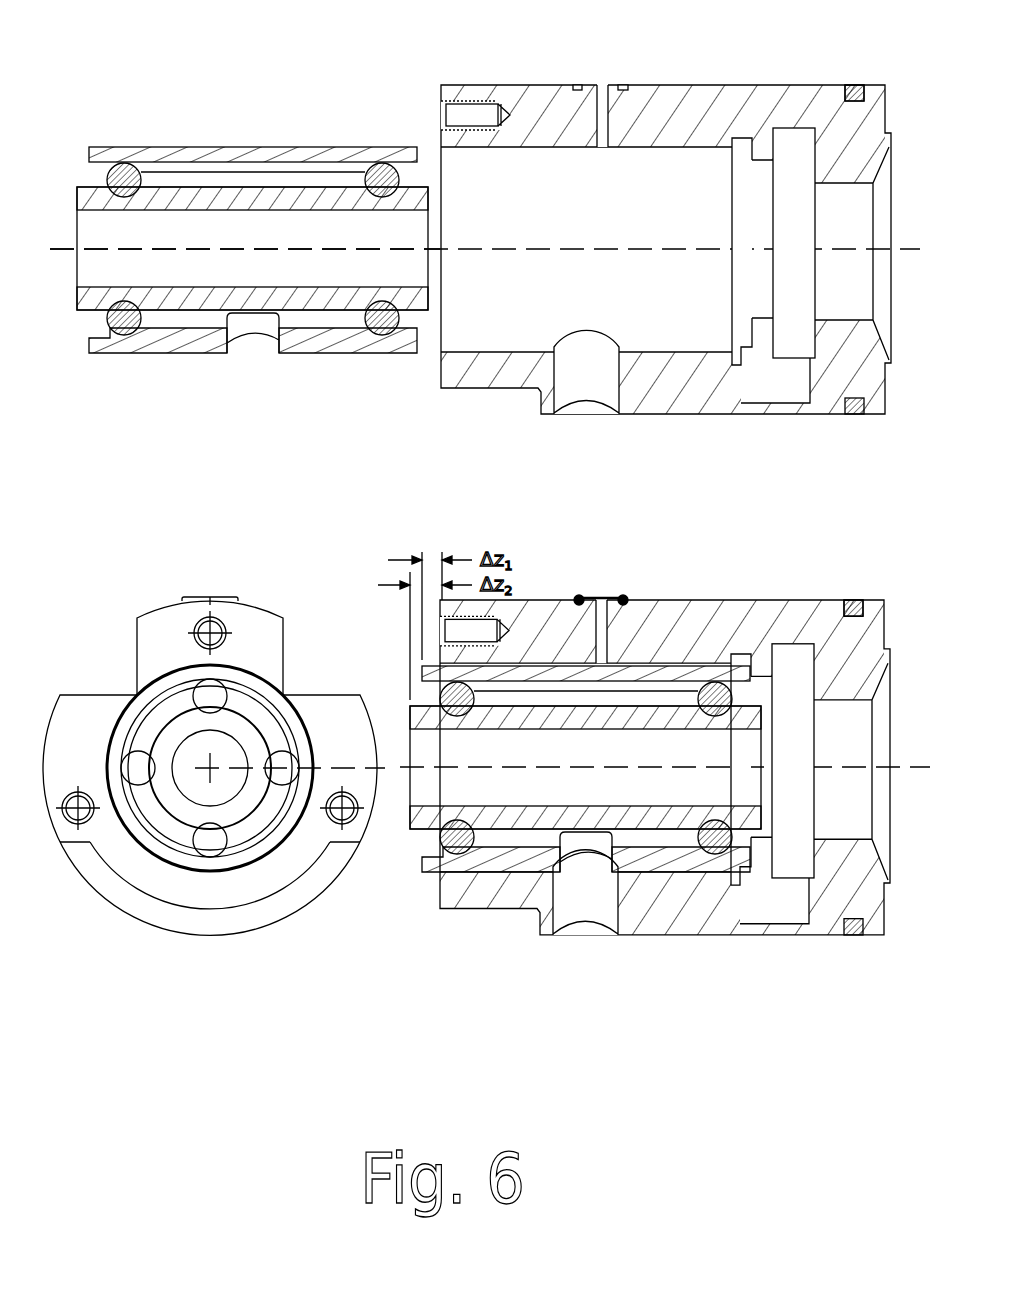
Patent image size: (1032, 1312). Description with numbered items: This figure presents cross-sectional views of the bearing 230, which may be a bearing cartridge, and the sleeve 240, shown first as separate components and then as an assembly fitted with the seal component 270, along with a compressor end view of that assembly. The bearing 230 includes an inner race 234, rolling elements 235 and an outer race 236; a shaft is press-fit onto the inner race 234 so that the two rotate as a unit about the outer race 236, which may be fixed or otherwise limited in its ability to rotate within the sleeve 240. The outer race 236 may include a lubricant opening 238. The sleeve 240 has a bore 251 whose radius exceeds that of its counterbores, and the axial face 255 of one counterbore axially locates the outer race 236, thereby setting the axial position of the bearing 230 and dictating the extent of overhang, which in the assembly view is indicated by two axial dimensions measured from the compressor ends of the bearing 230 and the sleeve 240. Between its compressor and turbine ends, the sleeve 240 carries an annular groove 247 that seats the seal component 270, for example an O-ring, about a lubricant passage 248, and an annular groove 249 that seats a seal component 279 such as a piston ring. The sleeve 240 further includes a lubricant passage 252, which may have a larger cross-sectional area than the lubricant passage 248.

The bearing 230 is at (234, 110).
The inner race 234 is at (243, 210).
The rolling elements 235 is at (210, 843).
The outer race 236 is at (403, 147).
The lubricant opening 238 is at (275, 338).
The sleeve 240 is at (713, 128).
The annular groove 247 is at (624, 85).
The lubricant passage 248 is at (597, 85).
The annular groove 249 is at (852, 92).
The bore 251 is at (575, 197).
The lubricant passage 252 is at (612, 401).
The axial face 255 is at (732, 164).
The seal component 270 is at (232, 597).
The seal component 279 is at (850, 85).